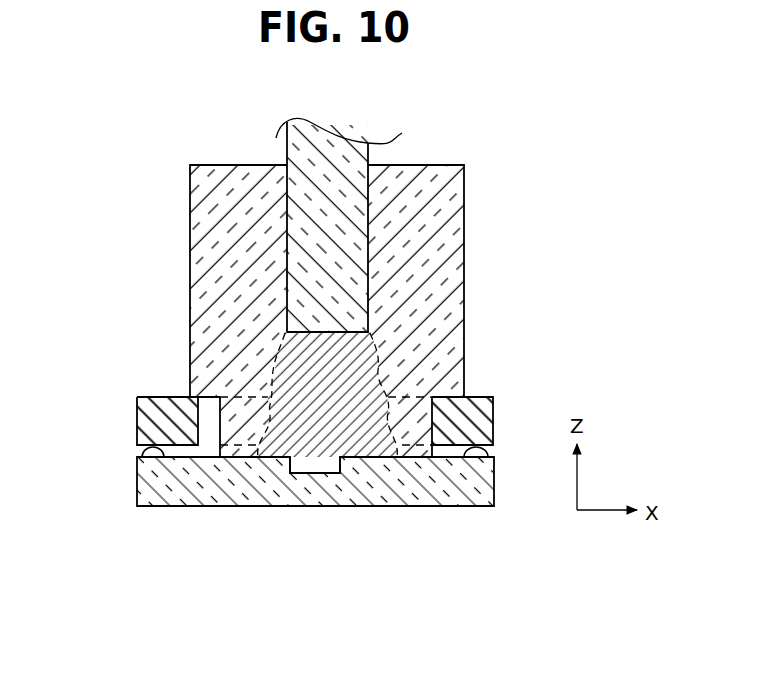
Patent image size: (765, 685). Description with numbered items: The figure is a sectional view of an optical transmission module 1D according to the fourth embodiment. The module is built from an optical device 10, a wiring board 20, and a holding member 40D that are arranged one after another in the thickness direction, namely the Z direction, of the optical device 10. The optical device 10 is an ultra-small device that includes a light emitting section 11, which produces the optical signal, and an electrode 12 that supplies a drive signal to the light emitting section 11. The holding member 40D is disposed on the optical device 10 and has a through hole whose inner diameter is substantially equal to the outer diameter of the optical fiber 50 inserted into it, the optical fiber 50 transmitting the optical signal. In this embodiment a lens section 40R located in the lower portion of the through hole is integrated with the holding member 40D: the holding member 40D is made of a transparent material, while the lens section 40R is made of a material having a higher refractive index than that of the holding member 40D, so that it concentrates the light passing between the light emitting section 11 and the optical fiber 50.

The optical transmission module 1D is at (574, 228).
The optical device 10 is at (137, 490).
The light emitting section 11 is at (292, 472).
The electrode 12 is at (142, 453).
The wiring board 20 is at (158, 396).
The holding member 40D is at (190, 213).
The lens section 40R is at (272, 372).
The optical fiber 50 is at (287, 150).